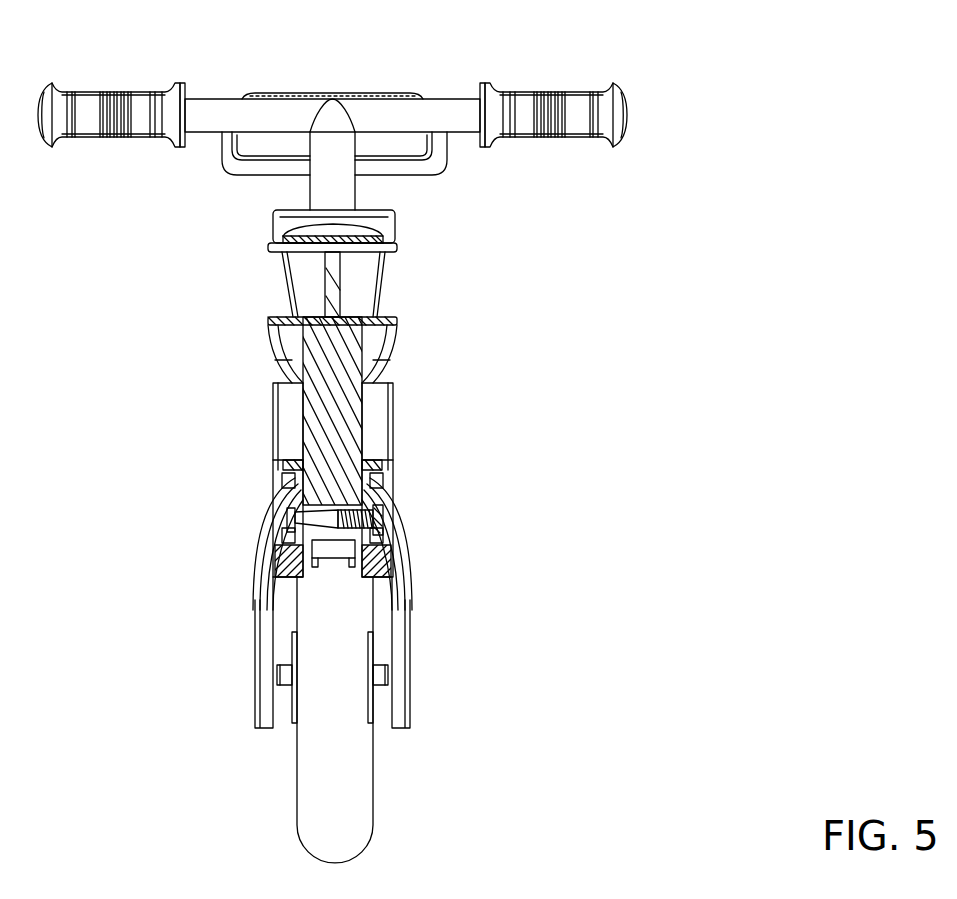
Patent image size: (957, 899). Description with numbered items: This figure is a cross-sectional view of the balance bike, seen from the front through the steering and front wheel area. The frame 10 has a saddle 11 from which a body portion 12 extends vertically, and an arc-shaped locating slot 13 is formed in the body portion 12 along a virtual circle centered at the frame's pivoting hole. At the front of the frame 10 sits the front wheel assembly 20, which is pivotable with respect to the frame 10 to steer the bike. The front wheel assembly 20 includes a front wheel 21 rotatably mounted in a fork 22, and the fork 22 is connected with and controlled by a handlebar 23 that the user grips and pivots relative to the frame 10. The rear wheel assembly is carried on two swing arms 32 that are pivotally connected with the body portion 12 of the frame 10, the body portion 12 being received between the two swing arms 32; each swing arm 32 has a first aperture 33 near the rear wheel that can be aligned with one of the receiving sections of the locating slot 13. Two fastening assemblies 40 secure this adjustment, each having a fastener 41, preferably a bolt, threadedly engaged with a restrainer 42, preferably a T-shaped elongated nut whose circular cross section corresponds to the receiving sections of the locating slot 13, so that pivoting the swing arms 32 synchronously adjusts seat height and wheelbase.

The frame 10 is at (240, 292).
The saddle 11 is at (370, 242).
The body portion 12 is at (358, 416).
The arc-shaped locating slot 13 is at (292, 570).
The front wheel assembly 20 is at (449, 88).
The front wheel 21 is at (357, 800).
The fork 22 is at (403, 518).
The handlebar 23 is at (200, 113).
The swing arm 32 is at (373, 462).
The first aperture 33 is at (382, 530).
The fastening assembly 40 is at (265, 511).
The fastener 41 is at (283, 527).
The restrainer 42 is at (277, 491).